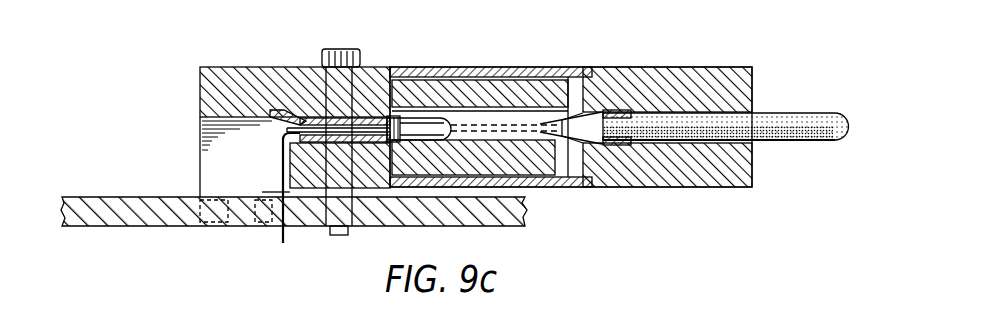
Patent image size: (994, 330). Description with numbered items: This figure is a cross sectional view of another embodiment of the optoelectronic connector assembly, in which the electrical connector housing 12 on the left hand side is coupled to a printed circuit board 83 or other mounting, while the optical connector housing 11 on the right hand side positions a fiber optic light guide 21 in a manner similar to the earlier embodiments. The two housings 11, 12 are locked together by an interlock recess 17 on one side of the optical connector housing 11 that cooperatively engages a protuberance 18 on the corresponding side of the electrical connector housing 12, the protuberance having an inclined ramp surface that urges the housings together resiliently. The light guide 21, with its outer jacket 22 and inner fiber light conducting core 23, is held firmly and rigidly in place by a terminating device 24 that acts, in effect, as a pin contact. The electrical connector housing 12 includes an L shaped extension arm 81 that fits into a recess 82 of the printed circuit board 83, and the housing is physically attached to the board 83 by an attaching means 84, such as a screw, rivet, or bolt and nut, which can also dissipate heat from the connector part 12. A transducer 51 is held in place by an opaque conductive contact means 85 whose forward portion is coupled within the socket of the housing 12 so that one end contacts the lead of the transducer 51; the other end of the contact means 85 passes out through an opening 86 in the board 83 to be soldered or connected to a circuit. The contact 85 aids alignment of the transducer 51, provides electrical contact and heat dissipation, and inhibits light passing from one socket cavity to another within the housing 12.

The optical connector housing 11 is at (650, 64).
The electrical connector housing 12 is at (250, 67).
The interlock recess 17 is at (497, 70).
The protuberance 18 is at (480, 67).
The fiber optic light guide 21 is at (792, 110).
The outer jacket 22 is at (802, 141).
The inner fiber light conducting core 23 is at (558, 130).
The terminating device 24 is at (620, 147).
The transducer 51 is at (437, 120).
The L shaped extension arm 81 is at (253, 232).
The recess 82 is at (213, 230).
The printed circuit board 83 is at (80, 230).
The attaching means 84 is at (347, 52).
The opaque conductive contact means 85 is at (285, 122).
The opening 86 is at (283, 226).